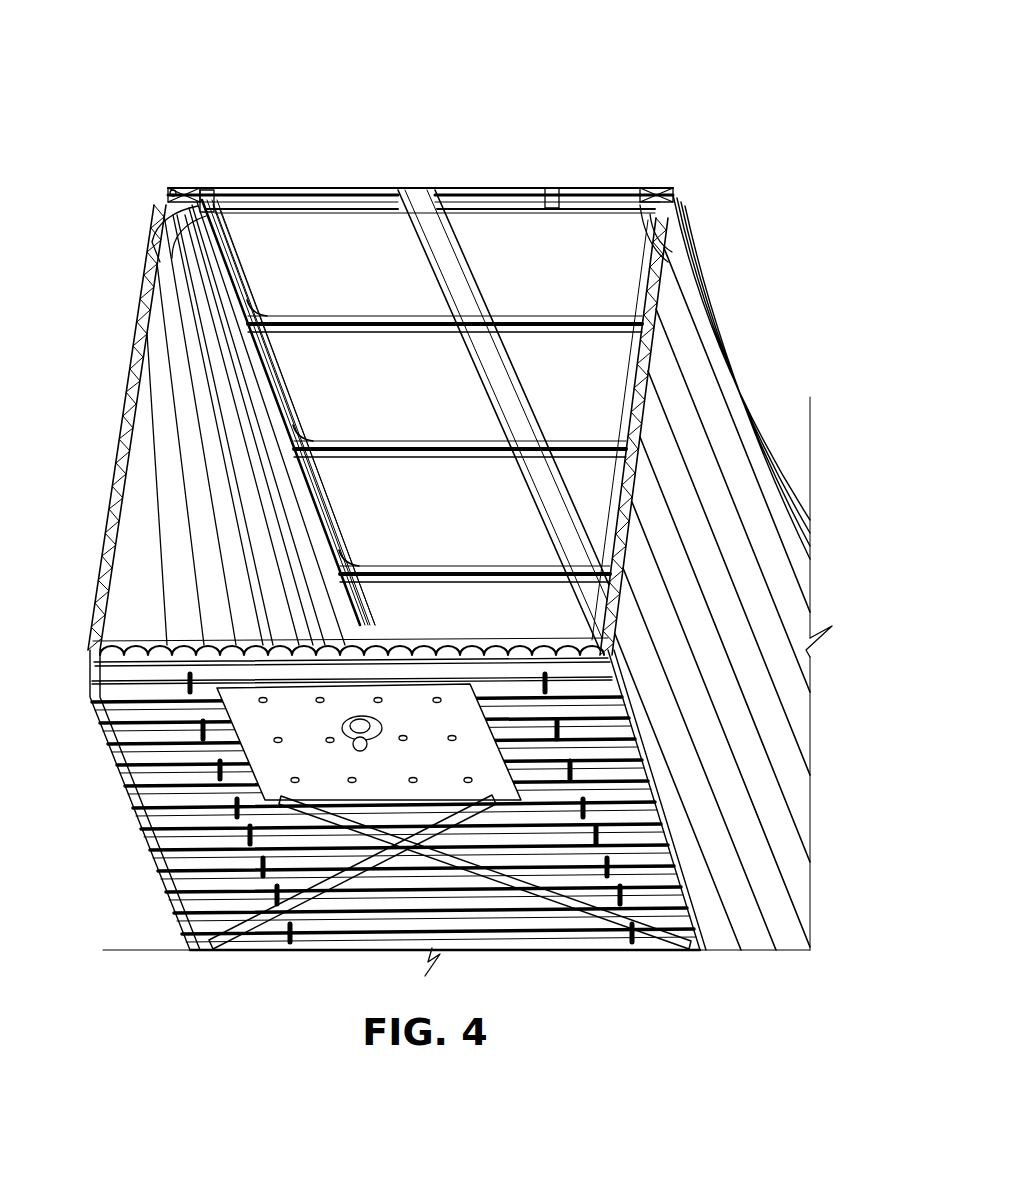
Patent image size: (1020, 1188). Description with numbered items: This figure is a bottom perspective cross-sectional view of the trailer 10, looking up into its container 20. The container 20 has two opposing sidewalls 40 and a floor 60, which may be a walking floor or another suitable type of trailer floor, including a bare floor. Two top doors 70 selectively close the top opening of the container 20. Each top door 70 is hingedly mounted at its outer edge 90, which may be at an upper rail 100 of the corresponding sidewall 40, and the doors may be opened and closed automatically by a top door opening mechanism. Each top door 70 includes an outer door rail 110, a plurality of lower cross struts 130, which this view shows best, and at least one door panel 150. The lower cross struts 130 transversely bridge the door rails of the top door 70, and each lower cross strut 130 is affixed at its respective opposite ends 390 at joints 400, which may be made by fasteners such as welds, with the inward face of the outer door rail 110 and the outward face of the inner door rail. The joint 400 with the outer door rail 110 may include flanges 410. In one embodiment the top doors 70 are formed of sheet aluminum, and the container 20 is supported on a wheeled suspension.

The trailer 10 is at (190, 78).
The container 20 is at (98, 434).
The sidewall 40 is at (153, 383).
The floor 60 is at (150, 632).
The top door 70 is at (270, 163).
The outer edge 90 is at (170, 186).
The upper rail 100 is at (178, 224).
The outer door rail 110 is at (207, 188).
The lower cross strut 130 is at (328, 205).
The door panel 150 is at (395, 190).
The opposite ends 390 is at (298, 300).
The joint 400 is at (240, 322).
The flange 410 is at (232, 215).